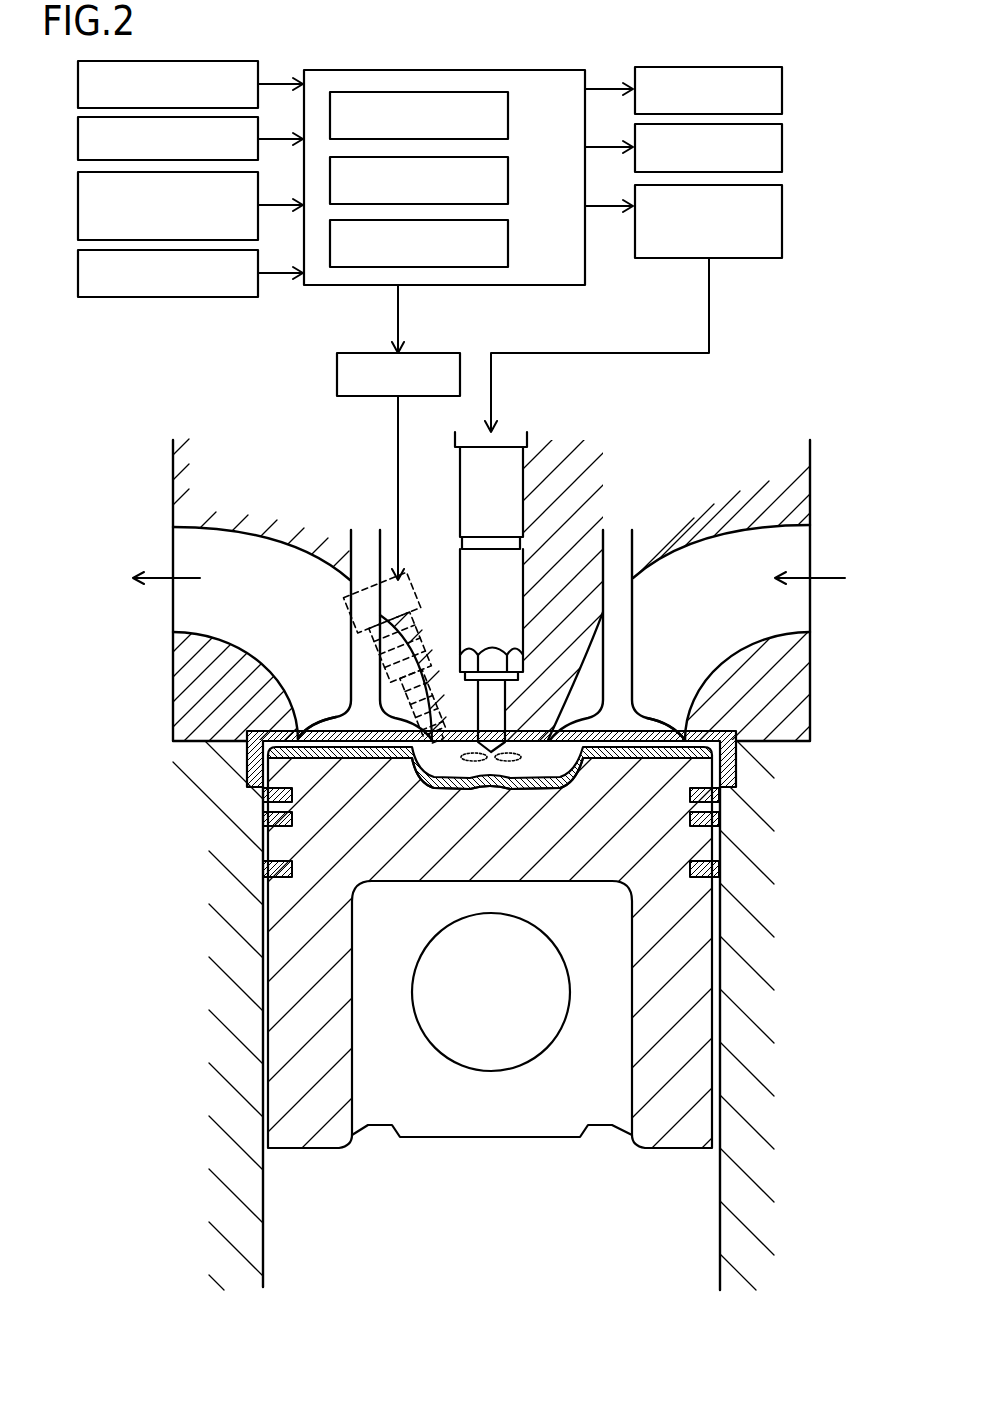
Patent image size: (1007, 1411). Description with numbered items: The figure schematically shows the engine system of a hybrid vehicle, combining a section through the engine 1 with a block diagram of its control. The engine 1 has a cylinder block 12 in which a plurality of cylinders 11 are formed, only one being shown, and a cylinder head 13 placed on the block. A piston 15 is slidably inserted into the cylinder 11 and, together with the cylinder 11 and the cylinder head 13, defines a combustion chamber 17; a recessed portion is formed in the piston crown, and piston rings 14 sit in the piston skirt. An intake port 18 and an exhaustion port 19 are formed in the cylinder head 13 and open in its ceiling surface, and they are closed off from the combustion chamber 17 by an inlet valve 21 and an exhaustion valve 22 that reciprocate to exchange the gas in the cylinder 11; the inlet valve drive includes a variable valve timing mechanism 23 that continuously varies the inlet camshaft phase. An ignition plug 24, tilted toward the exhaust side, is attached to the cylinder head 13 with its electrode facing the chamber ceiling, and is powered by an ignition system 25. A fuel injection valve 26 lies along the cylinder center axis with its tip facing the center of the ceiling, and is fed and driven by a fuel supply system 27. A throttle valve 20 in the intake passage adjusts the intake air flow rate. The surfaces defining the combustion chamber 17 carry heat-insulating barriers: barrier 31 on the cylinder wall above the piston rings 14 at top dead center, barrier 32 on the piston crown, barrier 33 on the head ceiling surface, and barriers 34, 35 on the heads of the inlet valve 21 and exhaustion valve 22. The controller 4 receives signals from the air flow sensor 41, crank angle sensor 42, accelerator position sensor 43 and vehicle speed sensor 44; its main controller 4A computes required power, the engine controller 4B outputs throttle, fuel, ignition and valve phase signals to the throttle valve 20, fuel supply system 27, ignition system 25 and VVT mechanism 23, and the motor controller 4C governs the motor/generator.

The engine 1 is at (135, 488).
The controller 4 is at (468, 149).
The main controller 4A is at (510, 115).
The engine controller 4B is at (510, 182).
The motor controller 4C is at (510, 247).
The cylinder 11 is at (720, 1245).
The cylinder block 12 is at (215, 893).
The cylinder head 13 is at (173, 683).
The piston rings 14 is at (718, 868).
The piston 15 is at (668, 1137).
The combustion chamber 17 is at (548, 762).
The intake port 18 is at (783, 632).
The exhaustion port 19 is at (208, 633).
The throttle valve 20 is at (784, 91).
The inlet valve 21 is at (603, 541).
The exhaustion valve 22 is at (351, 535).
The variable valve timing (VVT) mechanism 23 is at (784, 149).
The ignition plug 24 is at (412, 578).
The ignition system 25 is at (336, 375).
The fuel injection valve 26 is at (523, 482).
The fuel supply system 27 is at (784, 222).
The heat-insulating barrier 31 is at (735, 772).
The heat-insulating barrier 32 is at (420, 787).
The heat-insulating barrier 33 is at (266, 733).
The heat-insulating barrier 34 is at (655, 733).
The heat-insulating barrier 35 is at (328, 733).
The air flow sensor 41 is at (78, 84).
The crank angle sensor 42 is at (78, 139).
The accelerator position sensor 43 is at (78, 204).
The vehicle speed sensor 44 is at (78, 273).